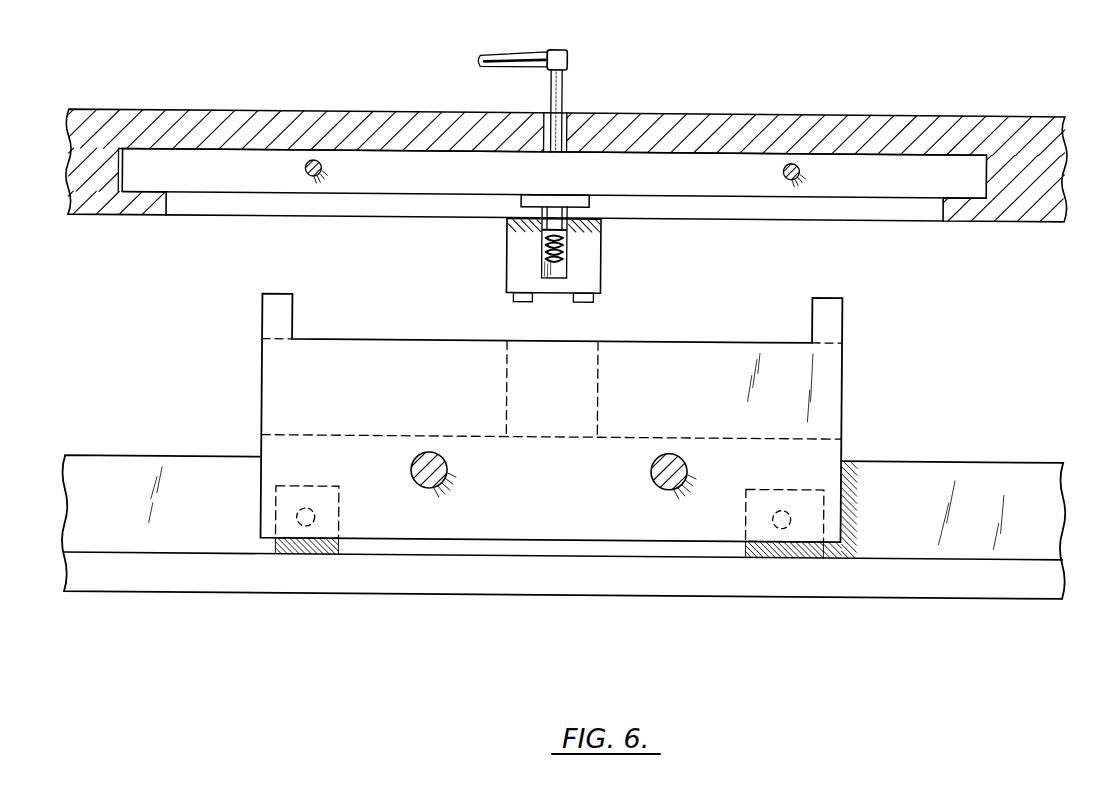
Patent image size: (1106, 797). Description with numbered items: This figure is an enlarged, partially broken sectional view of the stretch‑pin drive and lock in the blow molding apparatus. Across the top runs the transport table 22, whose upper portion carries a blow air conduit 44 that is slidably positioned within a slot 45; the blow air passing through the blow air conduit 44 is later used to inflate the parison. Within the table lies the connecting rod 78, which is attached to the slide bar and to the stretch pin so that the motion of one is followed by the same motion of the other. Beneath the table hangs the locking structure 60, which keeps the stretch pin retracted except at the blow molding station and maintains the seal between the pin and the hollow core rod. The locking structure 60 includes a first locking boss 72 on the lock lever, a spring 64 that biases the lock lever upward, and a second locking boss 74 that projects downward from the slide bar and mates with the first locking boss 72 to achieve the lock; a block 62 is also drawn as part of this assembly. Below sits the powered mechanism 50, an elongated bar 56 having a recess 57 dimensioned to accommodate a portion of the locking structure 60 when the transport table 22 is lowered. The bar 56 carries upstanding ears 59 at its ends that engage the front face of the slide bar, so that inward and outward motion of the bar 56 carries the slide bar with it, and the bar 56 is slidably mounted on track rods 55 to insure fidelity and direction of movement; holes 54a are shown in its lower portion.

The transport table 22 is at (877, 117).
The blow air conduit 44 is at (500, 52).
The slot 45 is at (547, 112).
The connecting rod 78 is at (321, 162).
The second locking boss 74 is at (560, 212).
The first locking boss 72 is at (545, 232).
The spring 64 is at (562, 246).
The locking structure 60 is at (608, 248).
The block 62 is at (585, 282).
The powered mechanism 50 is at (575, 418).
The bar 56 is at (290, 387).
The recess 57 is at (555, 371).
The ears 59 is at (278, 323).
The track rods 55 is at (449, 471).
The holes 54a is at (316, 515).